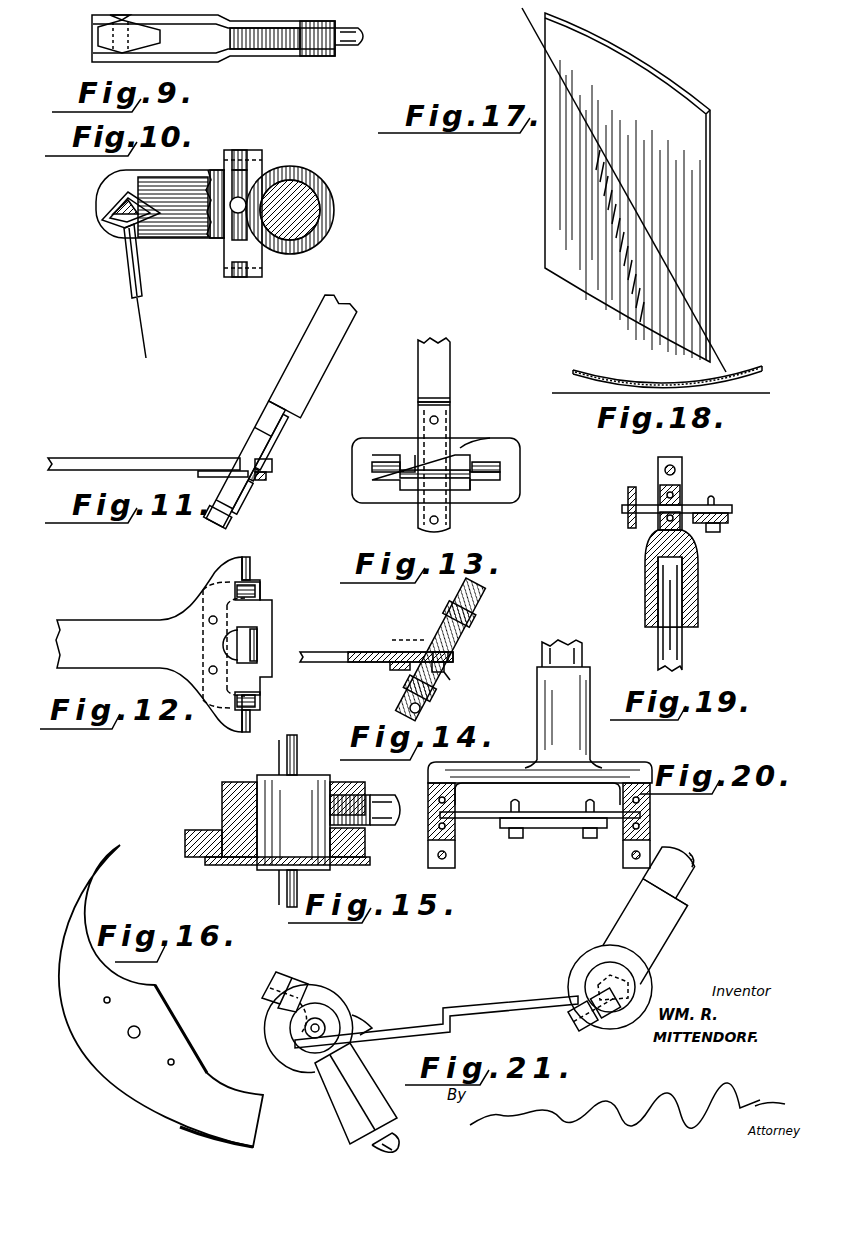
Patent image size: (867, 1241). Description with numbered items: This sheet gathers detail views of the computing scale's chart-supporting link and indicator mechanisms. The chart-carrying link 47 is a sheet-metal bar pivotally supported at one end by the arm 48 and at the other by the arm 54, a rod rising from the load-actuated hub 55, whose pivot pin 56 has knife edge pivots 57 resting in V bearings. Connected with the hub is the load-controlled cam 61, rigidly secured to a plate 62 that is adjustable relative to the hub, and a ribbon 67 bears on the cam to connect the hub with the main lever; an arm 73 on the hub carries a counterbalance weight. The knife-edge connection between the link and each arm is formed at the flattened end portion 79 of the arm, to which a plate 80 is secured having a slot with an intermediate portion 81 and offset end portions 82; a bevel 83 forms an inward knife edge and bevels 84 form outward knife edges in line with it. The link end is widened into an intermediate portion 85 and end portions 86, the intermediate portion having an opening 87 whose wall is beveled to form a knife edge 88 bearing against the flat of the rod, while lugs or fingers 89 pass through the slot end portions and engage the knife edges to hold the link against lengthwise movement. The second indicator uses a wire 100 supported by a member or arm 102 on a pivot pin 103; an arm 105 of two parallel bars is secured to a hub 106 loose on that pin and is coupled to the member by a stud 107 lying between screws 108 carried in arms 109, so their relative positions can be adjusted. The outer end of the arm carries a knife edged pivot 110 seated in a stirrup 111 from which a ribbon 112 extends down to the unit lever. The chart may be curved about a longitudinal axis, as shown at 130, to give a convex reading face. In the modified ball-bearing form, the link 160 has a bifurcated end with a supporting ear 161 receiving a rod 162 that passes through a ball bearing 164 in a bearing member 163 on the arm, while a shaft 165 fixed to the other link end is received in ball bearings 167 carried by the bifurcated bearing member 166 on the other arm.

In FIG. 11, the link 47 is at (150, 458).
In FIG. 12, the link 47 is at (115, 620).
In FIG. 14, the link 47 is at (362, 664).
In FIG. 11, the arm 48 is at (290, 364).
In FIG. 13, the arm 48 is at (424, 368).
In FIG. 20, the arm 48 is at (582, 652).
In FIG. 21, the arm 48 is at (690, 878).
In FIG. 19, the arm 54 is at (675, 652).
In FIG. 21, the arm 54 is at (400, 1138).
In FIG. 15, the hub 55 is at (239, 819).
In FIG. 15, the pivot pin 56 is at (293, 822).
In FIG. 15, the knife edge pivots 57 is at (297, 750).
In FIG. 15, the cam 61 is at (205, 862).
In FIG. 16, the cam 61 is at (168, 1030).
In FIG. 15, the plate 62 is at (372, 856).
In FIG. 15, the ribbon 67 is at (185, 844).
In FIG. 9, the arm 73 is at (349, 36).
In FIG. 15, the arm 73 is at (388, 795).
In FIG. 11, the flattened end portion 79 is at (214, 516).
In FIG. 13, the flattened end portion 79 is at (430, 462).
In FIG. 14, the flattened end portion 79 is at (432, 634).
In FIG. 11, the plate 80 is at (248, 488).
In FIG. 13, the plate 80 is at (352, 490).
In FIG. 14, the plate 80 is at (458, 634).
In FIG. 13, the intermediate portion of slot 81 is at (470, 450).
In FIG. 13, the end portions of slot 82 is at (486, 480).
In FIG. 13, the bevel 83 is at (435, 486).
In FIG. 14, the bevel 83 is at (424, 694).
In FIG. 13, the bevel 84 is at (384, 464).
In FIG. 11, the intermediate portion 85 is at (272, 465).
In FIG. 12, the intermediate portion 85 is at (268, 628).
In FIG. 14, the intermediate portion 85 is at (455, 657).
In FIG. 11, the end portions 86 is at (233, 462).
In FIG. 12, the end portions 86 is at (245, 560).
In FIG. 14, the end portions 86 is at (395, 640).
In FIG. 12, the opening 87 is at (232, 645).
In FIG. 14, the opening 87 is at (398, 672).
In FIG. 12, the knife edge 88 is at (257, 648).
In FIG. 14, the knife edge 88 is at (458, 662).
In FIG. 11, the lugs or fingers 89 is at (266, 476).
In FIG. 12, the lugs or fingers 89 is at (265, 700).
In FIG. 14, the lugs or fingers 89 is at (445, 671).
In FIG. 17, the wire 100 is at (668, 268).
In FIG. 18, the wire 100 is at (752, 395).
In FIG. 10, the member or arm 102 is at (312, 226).
In FIG. 10, the pivot pin 103 is at (292, 200).
In FIG. 9, the arm 105 is at (200, 62).
In FIG. 10, the arm 105 is at (182, 242).
In FIG. 9, the hub 106 is at (305, 52).
In FIG. 10, the stud or projection 107 is at (230, 206).
In FIG. 10, the screws 108 is at (237, 277).
In FIG. 10, the arms 109 is at (257, 262).
In FIG. 9, the knife edged pivot 110 is at (112, 21).
In FIG. 10, the knife edged pivot 110 is at (110, 208).
In FIG. 9, the stirrup 111 is at (98, 38).
In FIG. 10, the stirrup 111 is at (118, 236).
In FIG. 10, the ribbon 112 is at (140, 333).
In FIG. 17, the curved chart 130 is at (696, 212).
In FIG. 18, the curved chart 130 is at (640, 377).
In FIG. 19, the link 160 is at (728, 520).
In FIG. 20, the link 160 is at (558, 828).
In FIG. 21, the link 160 is at (488, 1010).
In FIG. 19, the supporting ear 161 is at (636, 528).
In FIG. 21, the supporting ear 161 is at (362, 1022).
In FIG. 19, the rod 162 is at (706, 503).
In FIG. 21, the rod 162 is at (320, 1022).
In FIG. 19, the bearing member 163 is at (690, 558).
In FIG. 21, the bearing member 163 is at (345, 1118).
In FIG. 19, the ball bearing 164 is at (684, 494).
In FIG. 21, the ball bearing 164 is at (300, 1025).
In FIG. 20, the shaft 165 is at (492, 828).
In FIG. 21, the shaft 165 is at (618, 985).
In FIG. 20, the bearing member 166 is at (592, 752).
In FIG. 21, the bearing member 166 is at (660, 944).
In FIG. 20, the ball bearings 167 is at (455, 800).
In FIG. 21, the ball bearings 167 is at (592, 975).